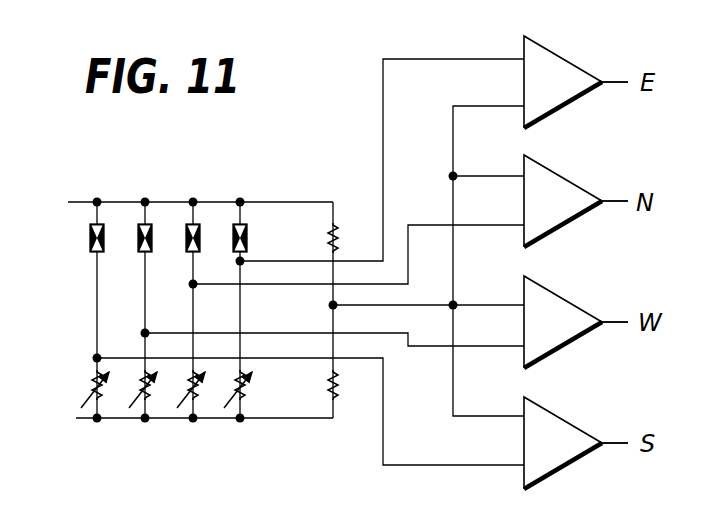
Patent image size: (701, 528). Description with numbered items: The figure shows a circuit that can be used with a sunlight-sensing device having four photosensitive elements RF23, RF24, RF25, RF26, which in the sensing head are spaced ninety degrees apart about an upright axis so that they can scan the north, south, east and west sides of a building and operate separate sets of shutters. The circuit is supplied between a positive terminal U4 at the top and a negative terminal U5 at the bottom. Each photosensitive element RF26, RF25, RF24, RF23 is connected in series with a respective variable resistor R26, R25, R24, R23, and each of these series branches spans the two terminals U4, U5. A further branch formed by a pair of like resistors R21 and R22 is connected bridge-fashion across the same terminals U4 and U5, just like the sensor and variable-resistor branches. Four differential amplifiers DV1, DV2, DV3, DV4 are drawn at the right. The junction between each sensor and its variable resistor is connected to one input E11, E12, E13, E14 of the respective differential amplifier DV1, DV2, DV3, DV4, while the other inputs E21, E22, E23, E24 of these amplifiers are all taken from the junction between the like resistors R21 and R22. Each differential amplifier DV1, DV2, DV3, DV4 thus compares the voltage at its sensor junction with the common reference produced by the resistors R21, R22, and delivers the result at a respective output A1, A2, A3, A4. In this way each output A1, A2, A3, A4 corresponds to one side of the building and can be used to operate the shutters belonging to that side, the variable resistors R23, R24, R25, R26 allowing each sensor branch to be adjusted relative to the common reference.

The positive terminal U4 is at (177, 203).
The negative terminal U5 is at (179, 419).
The photosensitive element RF26 is at (99, 215).
The photosensitive element RF25 is at (147, 215).
The photosensitive element RF24 is at (195, 215).
The photosensitive element RF23 is at (245, 215).
The variable resistor R26 is at (93, 408).
The variable resistor R25 is at (143, 408).
The variable resistor R24 is at (193, 408).
The variable resistor R23 is at (240, 408).
The like resistor R21 is at (313, 238).
The like resistor R22 is at (313, 385).
The other input of differential amplifier E21 is at (382, 149).
The input of differential amplifier E11 is at (488, 195).
The input of differential amplifier E12 is at (488, 165).
The other input of differential amplifier E22 is at (358, 244).
The input of differential amplifier E13 is at (428, 294).
The other input of differential amplifier E23 is at (334, 335).
The input of differential amplifier E14 is at (488, 360).
The other input of differential amplifier E24 is at (310, 411).
The differential amplifier DV1 is at (583, 52).
The differential amplifier DV2 is at (583, 171).
The differential amplifier DV3 is at (583, 292).
The differential amplifier DV4 is at (585, 413).
The output of differential amplifier A1 is at (615, 71).
The output of differential amplifier A2 is at (615, 190).
The output of differential amplifier A3 is at (615, 311).
The output of differential amplifier A4 is at (615, 432).